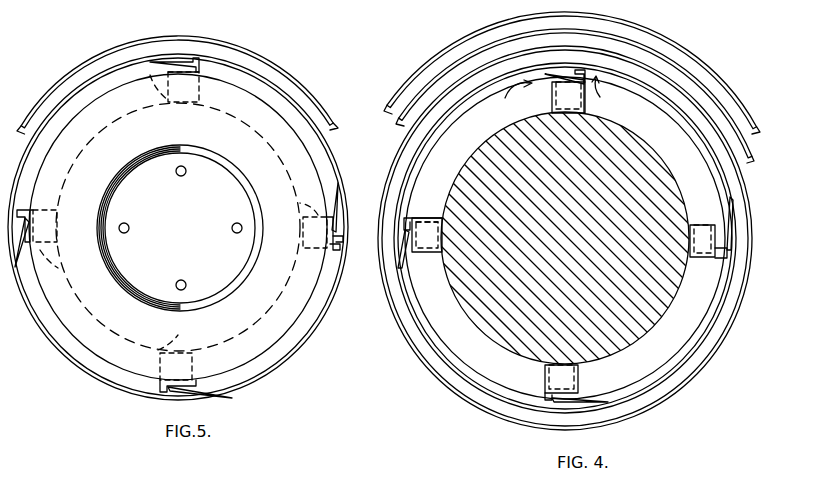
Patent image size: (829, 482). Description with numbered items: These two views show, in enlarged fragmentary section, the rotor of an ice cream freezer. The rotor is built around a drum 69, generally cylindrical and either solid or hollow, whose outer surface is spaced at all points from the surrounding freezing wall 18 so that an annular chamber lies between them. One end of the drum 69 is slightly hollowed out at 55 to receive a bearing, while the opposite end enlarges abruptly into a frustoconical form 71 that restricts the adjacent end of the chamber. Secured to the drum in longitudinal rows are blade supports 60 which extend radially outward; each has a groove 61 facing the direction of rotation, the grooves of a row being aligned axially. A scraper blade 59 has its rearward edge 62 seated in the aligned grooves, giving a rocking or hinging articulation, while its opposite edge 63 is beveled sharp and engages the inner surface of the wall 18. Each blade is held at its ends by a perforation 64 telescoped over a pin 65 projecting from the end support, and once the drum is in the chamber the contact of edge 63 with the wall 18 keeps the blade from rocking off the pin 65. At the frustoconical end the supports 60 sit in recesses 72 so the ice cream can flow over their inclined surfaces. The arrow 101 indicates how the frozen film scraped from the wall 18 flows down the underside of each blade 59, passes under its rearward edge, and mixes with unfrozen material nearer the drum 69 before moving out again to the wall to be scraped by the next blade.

In FIG. 5, the freezing wall 18 is at (277, 389).
In FIG. 4, the freezing wall 18 is at (430, 346).
In FIG. 5, the hollowed out end 55 is at (243, 197).
In FIG. 5, the scraper blades 59 is at (205, 386).
In FIG. 4, the scraper blades 59 is at (402, 274).
In FIG. 4, the blade supports 60 is at (588, 104).
In FIG. 4, the groove 61 is at (408, 222).
In FIG. 4, the rearward edge 62 is at (428, 216).
In FIG. 4, the opposite edge 63 is at (403, 275).
In FIG. 5, the perforation 64 is at (341, 232).
In FIG. 5, the pin 65 is at (340, 240).
In FIG. 4, the drum 69 is at (632, 157).
In FIG. 5, the frustoconical form 71 is at (290, 311).
In FIG. 5, the recesses 72 is at (179, 213).
In FIG. 4, the arrow 101 is at (574, 93).